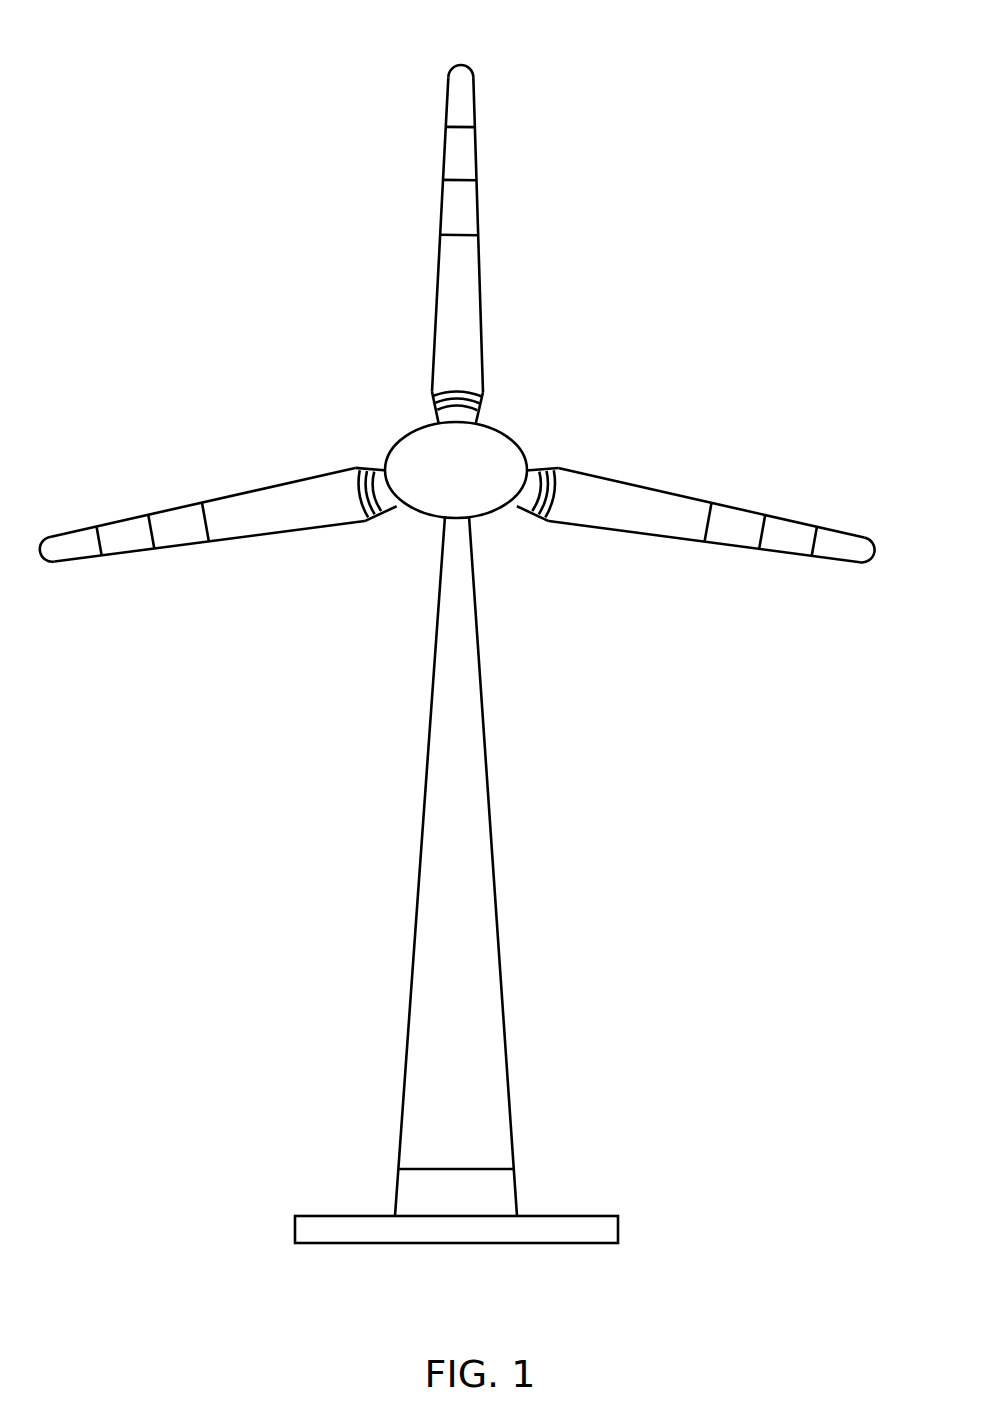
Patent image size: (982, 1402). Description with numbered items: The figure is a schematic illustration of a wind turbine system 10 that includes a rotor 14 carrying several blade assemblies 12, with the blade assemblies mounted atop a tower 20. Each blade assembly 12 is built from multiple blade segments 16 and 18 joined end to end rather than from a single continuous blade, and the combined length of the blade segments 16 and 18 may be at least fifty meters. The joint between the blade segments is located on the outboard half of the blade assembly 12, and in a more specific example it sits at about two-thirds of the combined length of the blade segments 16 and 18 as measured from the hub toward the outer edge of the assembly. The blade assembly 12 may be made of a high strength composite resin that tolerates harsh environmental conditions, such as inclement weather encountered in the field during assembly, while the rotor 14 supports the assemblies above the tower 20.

The wind turbine system 10 is at (457, 625).
The blade assembly 12 is at (457, 354).
The rotor 14 is at (505, 436).
The blade segment 16 is at (306, 530).
The blade segment 18 is at (60, 558).
The tower 20 is at (487, 919).